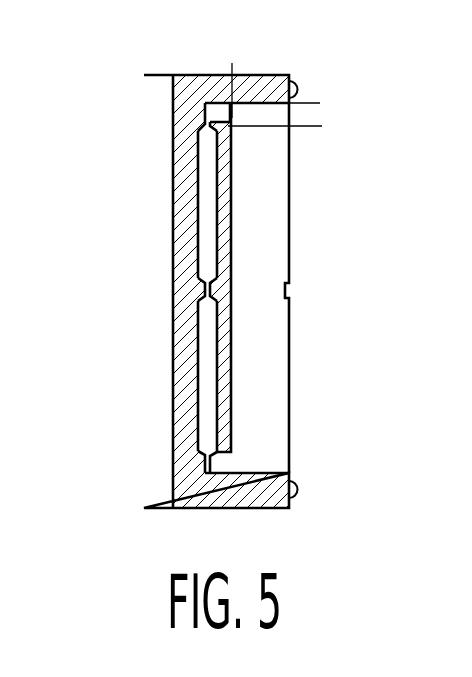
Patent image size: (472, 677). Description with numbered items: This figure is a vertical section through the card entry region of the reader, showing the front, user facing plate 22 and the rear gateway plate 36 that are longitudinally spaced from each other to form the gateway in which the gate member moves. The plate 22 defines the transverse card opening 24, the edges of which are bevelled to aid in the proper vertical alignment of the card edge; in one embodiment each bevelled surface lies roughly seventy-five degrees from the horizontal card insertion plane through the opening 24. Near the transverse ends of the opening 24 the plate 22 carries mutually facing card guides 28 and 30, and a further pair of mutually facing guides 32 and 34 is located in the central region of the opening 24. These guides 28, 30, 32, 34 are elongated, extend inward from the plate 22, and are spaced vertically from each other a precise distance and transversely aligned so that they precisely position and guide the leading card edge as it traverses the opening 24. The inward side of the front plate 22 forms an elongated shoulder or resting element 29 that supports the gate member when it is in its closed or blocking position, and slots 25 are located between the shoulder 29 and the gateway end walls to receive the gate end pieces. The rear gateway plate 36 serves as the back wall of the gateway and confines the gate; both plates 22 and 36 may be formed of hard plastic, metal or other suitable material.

The front, user facing plate 22 is at (192, 87).
The transverse card opening 24 is at (208, 360).
The slots 25 is at (222, 459).
The card guide 28 is at (205, 107).
The elongated shoulder or resting element 29 is at (227, 233).
The card guide 30 is at (210, 117).
The card guide 32 is at (203, 287).
The card guide 34 is at (212, 287).
The rear gateway plate 36 is at (275, 177).